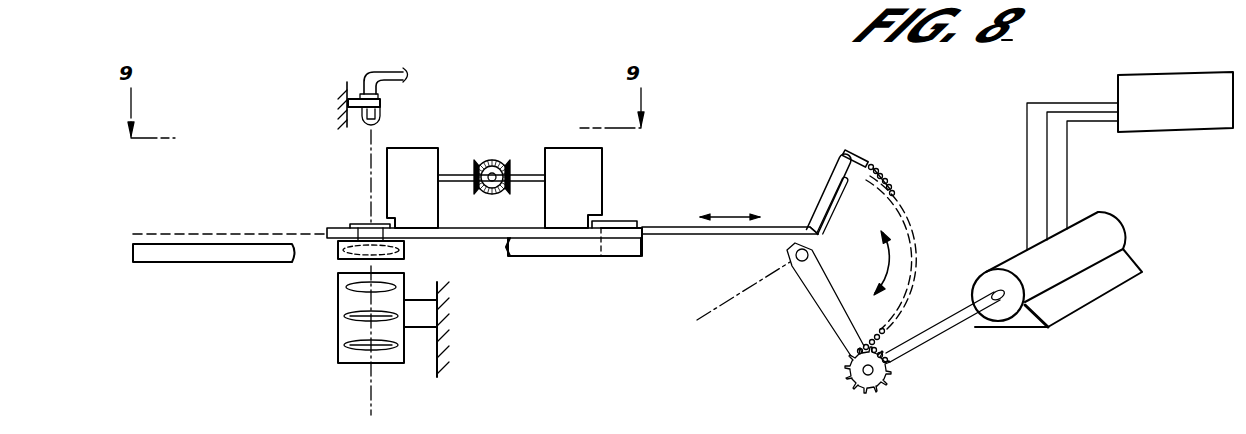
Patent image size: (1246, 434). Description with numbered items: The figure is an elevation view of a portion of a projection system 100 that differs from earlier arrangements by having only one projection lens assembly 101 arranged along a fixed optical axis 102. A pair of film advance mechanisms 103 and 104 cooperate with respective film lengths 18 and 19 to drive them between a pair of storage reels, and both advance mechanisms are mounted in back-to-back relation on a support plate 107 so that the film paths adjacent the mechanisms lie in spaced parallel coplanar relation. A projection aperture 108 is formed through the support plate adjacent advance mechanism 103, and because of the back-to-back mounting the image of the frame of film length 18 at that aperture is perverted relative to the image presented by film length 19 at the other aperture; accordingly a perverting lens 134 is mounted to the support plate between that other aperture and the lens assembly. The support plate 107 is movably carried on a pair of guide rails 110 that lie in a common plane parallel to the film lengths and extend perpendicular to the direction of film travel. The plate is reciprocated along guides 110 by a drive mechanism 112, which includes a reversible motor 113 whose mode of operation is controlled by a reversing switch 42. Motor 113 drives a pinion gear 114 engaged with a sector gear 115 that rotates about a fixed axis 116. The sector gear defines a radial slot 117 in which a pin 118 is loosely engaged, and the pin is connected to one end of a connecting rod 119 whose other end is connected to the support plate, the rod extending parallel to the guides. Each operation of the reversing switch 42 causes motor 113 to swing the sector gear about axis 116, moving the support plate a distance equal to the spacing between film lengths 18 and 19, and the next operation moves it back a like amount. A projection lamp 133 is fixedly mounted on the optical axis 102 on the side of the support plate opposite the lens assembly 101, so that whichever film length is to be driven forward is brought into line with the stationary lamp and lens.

The film length 18 is at (625, 225).
The film length 19 is at (355, 224).
The reversing switch 42 is at (1178, 76).
The projection system 100 is at (741, 112).
The projection lens assembly 101 is at (322, 333).
The optical axis 102 is at (370, 390).
The film advance mechanism 103 is at (566, 122).
The film advance mechanism 104 is at (437, 150).
The support plate 107 is at (530, 232).
The projection aperture 108 is at (624, 232).
The guide rails 110 is at (160, 258).
The drive mechanism 112 is at (960, 92).
The reversible motor 113 is at (1095, 240).
The pinion gear 114 is at (845, 375).
The sector gear 115 is at (895, 215).
The fixed axis 116 is at (728, 285).
The radial slot 117 is at (845, 184).
The pin 118 is at (818, 222).
The connecting rod 119 is at (730, 235).
The projection lamp 133 is at (385, 110).
The perverting lens 134 is at (338, 253).